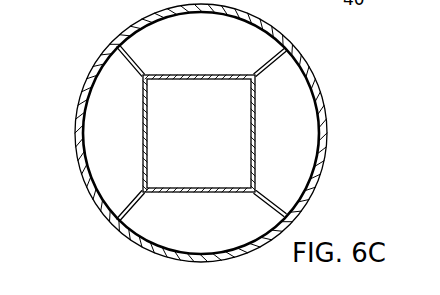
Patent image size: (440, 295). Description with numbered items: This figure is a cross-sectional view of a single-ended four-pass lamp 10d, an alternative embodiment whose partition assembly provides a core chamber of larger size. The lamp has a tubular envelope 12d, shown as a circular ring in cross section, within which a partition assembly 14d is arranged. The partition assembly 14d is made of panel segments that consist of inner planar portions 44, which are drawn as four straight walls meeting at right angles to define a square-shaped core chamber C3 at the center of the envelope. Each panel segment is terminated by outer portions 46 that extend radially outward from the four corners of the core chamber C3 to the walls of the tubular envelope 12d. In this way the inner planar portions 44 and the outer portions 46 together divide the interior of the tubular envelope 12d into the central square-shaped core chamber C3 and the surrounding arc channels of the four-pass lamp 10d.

The single-ended four-pass lamp 10d is at (65, 68).
The tubular envelope 12d is at (77, 114).
The partition assembly 14d is at (180, 123).
The inner planar portions 44 is at (142, 125).
The outer portions 46 is at (134, 56).
The square-shaped core chamber C3 is at (197, 128).